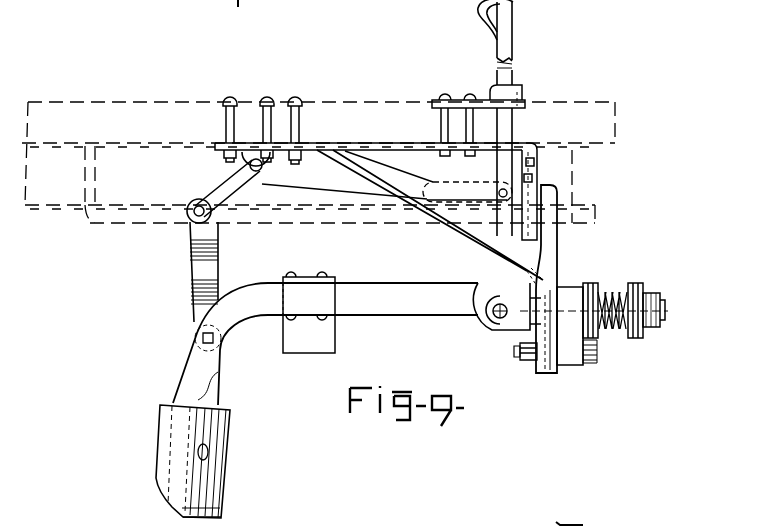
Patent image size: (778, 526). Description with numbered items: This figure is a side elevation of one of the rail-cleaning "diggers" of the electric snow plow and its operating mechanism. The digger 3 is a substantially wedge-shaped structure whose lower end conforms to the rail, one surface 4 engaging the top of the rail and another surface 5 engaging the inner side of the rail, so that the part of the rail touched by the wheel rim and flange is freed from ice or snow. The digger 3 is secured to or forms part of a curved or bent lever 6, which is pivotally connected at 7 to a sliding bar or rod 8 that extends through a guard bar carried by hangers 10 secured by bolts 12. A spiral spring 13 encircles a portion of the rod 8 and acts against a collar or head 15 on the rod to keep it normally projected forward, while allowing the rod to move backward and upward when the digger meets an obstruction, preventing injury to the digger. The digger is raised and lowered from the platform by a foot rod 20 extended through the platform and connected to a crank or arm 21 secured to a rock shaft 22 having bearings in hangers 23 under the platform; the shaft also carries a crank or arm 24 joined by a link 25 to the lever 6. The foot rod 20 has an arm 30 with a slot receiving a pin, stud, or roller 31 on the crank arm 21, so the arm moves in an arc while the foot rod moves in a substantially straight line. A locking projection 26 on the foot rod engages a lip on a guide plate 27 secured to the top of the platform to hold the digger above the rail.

The digger 3 is at (216, 455).
The surface 4 is at (573, 355).
The surface 5 is at (221, 517).
The curved or bent lever 6 is at (391, 283).
The pivot 7 is at (494, 318).
The sliding bar or rod 8 is at (518, 326).
The hangers 10 is at (547, 262).
The bolts 12 is at (527, 351).
The spiral spring 13 is at (613, 295).
The collar or head 15 is at (641, 286).
The foot rod 20 is at (512, 30).
The crank or arm 21 is at (323, 183).
The rock shaft 22 is at (260, 183).
The hangers 23 is at (242, 157).
The crank or arm 24 is at (237, 200).
The link 25 is at (192, 262).
The locking projection 26 is at (500, 38).
The guide plate 27 is at (488, 95).
The arm 30 is at (432, 182).
The pin, stud, or roller 31 is at (503, 198).